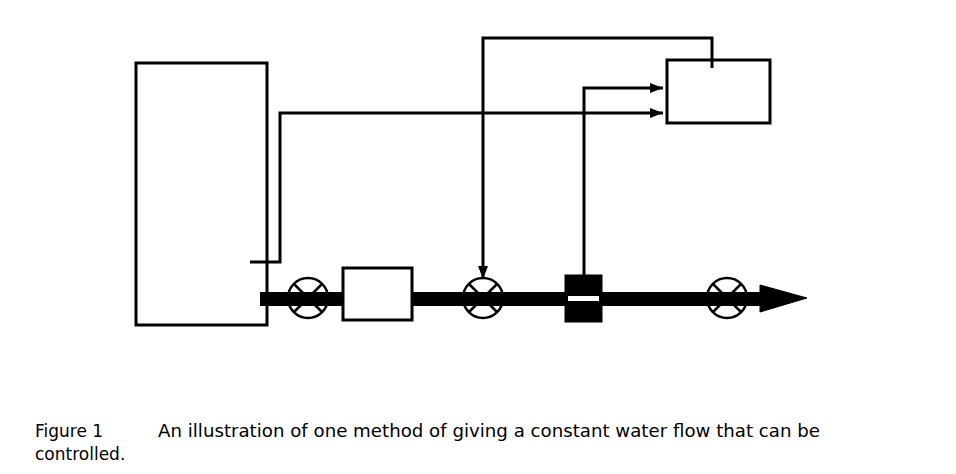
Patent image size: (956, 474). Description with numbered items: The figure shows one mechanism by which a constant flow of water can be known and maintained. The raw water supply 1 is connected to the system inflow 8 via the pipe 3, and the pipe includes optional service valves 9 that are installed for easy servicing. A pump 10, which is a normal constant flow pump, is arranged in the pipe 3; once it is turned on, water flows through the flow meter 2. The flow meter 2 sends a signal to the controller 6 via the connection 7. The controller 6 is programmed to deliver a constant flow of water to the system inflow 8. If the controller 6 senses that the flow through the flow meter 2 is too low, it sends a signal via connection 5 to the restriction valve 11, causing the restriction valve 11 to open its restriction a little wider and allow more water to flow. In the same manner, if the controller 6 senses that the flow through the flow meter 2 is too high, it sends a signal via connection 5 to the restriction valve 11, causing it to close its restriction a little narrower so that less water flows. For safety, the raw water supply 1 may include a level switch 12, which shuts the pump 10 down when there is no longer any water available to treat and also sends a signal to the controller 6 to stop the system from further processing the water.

The raw water supply 1 is at (181, 95).
The flow meter 2 is at (566, 282).
The pipe 3 is at (412, 290).
The connection 5 is at (716, 45).
The controller 6 is at (757, 88).
The connection 7 is at (587, 215).
The system inflow 8 is at (806, 298).
The service valves 9 is at (325, 318).
The pump 10 is at (355, 285).
The restriction valve 11 is at (462, 316).
The level switch 12 is at (250, 262).